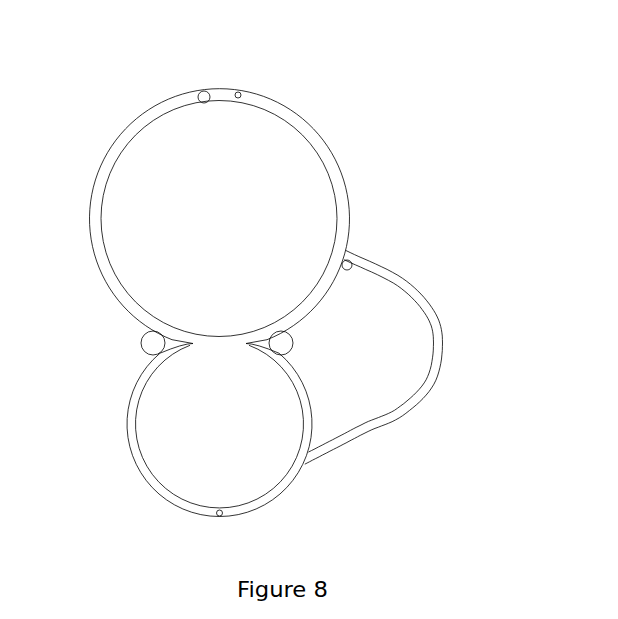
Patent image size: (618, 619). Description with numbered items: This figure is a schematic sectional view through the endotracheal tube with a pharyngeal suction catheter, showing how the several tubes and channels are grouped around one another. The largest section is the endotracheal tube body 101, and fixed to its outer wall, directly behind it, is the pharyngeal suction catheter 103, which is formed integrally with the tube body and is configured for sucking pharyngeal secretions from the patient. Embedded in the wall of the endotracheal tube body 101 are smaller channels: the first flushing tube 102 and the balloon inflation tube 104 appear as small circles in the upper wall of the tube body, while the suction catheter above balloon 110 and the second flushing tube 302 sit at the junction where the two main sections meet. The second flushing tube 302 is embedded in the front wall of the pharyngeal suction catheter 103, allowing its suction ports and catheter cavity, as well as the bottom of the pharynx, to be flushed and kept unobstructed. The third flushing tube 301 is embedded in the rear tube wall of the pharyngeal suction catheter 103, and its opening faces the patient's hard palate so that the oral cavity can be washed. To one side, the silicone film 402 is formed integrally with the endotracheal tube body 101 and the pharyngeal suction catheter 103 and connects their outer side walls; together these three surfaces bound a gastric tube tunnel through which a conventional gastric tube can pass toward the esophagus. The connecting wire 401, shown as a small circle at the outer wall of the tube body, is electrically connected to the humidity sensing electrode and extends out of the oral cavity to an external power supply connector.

The endotracheal tube body 101 is at (340, 220).
The first flushing tube 102 is at (203, 98).
The pharyngeal suction catheter 103 is at (302, 380).
The balloon inflation tube 104 is at (240, 93).
The suction catheter above balloon 110 is at (282, 343).
The third flushing tube 301 is at (222, 516).
The second flushing tube 302 is at (152, 348).
The connecting wire 401 is at (350, 262).
The silicone film 402 is at (417, 407).